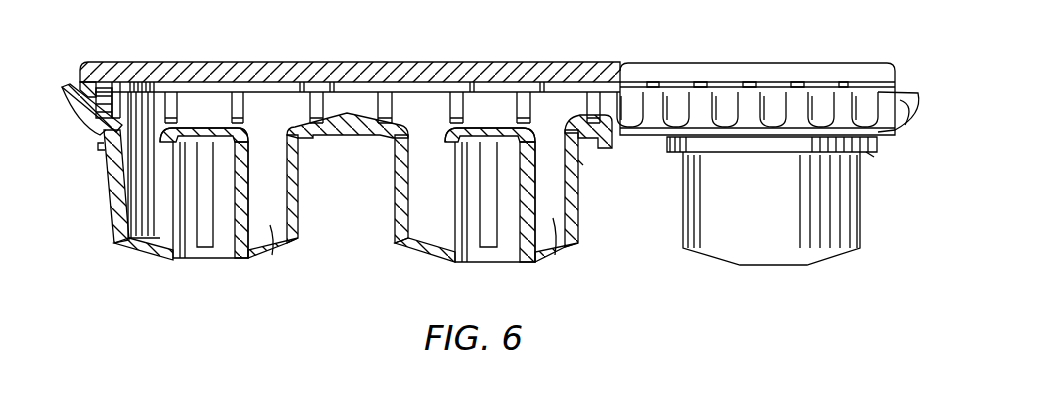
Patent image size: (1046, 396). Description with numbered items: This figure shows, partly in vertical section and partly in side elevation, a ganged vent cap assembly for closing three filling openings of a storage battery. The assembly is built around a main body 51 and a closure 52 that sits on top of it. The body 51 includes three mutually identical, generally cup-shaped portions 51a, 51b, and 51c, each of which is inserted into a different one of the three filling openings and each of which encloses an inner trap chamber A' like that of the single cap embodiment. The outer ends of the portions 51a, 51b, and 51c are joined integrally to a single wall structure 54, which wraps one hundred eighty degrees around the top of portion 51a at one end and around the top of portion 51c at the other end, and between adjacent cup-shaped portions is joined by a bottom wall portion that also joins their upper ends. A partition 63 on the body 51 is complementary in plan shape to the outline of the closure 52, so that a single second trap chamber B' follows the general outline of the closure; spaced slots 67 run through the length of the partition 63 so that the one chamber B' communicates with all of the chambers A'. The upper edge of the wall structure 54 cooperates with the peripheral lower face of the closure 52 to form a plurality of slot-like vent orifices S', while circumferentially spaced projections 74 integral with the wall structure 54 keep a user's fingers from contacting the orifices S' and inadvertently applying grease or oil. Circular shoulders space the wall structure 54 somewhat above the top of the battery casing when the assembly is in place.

The main body 51 is at (112, 249).
The cup-shaped portion 51a is at (177, 176).
The cup-shaped portion 51b is at (395, 202).
The cup-shaped portion 51c is at (771, 152).
The closure 52 is at (396, 52).
The wall structure 54 is at (84, 80).
The partition 63 is at (103, 86).
The slots 67 is at (230, 112).
The projections 74 is at (905, 118).
The inner trap chambers A' is at (428, 247).
The second trap chamber B' is at (84, 116).
The vent orifices S' is at (747, 83).